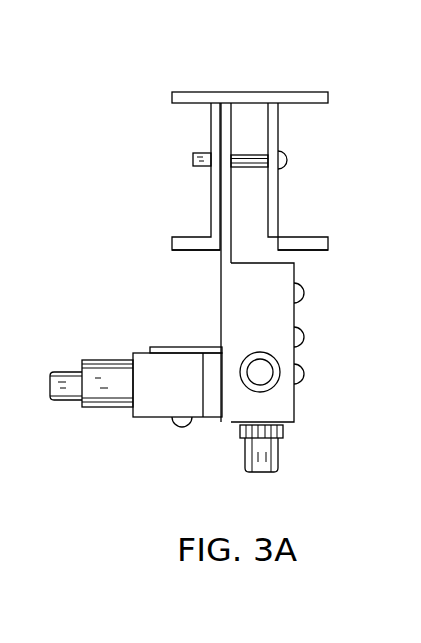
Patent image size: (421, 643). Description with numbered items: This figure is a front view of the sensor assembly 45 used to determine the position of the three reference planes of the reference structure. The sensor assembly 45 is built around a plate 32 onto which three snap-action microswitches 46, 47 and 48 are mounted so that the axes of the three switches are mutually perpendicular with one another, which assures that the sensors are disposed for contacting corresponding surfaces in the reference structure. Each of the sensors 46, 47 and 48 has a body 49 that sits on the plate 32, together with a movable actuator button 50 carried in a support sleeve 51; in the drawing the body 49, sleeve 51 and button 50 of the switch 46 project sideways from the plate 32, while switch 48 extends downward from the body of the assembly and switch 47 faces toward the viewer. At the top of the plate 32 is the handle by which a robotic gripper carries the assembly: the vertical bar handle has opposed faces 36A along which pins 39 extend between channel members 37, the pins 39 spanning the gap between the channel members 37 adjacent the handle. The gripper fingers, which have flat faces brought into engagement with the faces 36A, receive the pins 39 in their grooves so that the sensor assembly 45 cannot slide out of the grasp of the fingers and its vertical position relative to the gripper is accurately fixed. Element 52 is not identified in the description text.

The plate 32 is at (224, 92).
The opposed faces 36A is at (248, 103).
The pins 39 is at (258, 156).
The channel members 37 is at (210, 201).
The sensor assembly 45 is at (296, 418).
The snap-action microswitch 46 is at (134, 353).
The snap-action microswitch 47 is at (297, 370).
The snap-action microswitch 48 is at (287, 440).
The body 49 is at (171, 421).
The movable actuator button 50 is at (62, 404).
The support sleeve 51 is at (107, 408).
The plate 52 is at (179, 347).